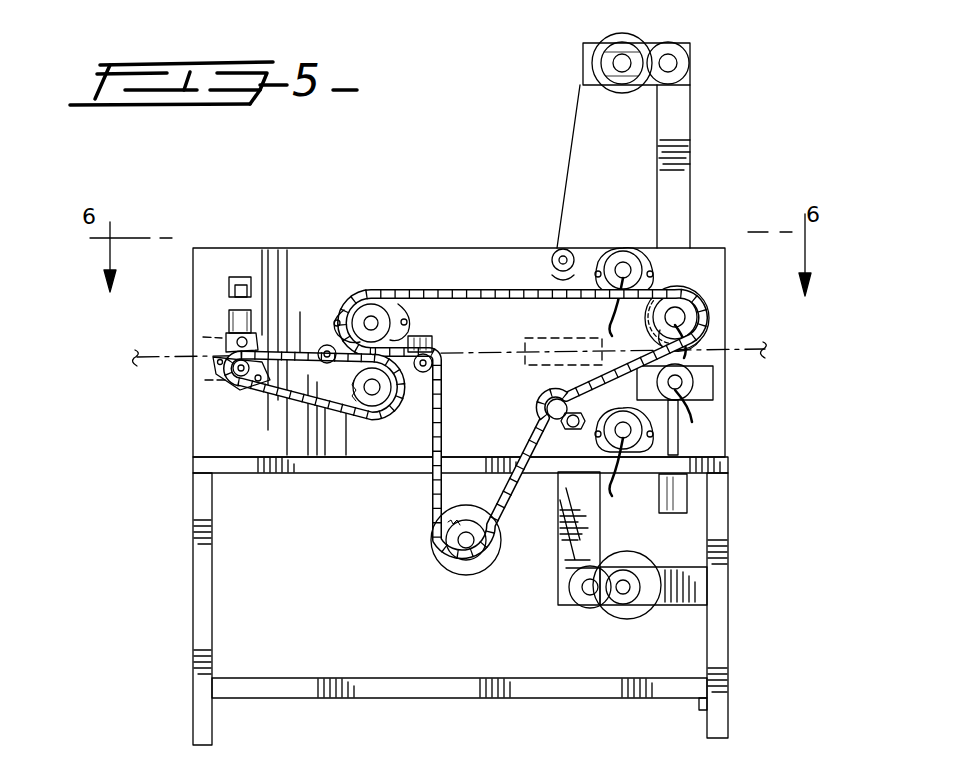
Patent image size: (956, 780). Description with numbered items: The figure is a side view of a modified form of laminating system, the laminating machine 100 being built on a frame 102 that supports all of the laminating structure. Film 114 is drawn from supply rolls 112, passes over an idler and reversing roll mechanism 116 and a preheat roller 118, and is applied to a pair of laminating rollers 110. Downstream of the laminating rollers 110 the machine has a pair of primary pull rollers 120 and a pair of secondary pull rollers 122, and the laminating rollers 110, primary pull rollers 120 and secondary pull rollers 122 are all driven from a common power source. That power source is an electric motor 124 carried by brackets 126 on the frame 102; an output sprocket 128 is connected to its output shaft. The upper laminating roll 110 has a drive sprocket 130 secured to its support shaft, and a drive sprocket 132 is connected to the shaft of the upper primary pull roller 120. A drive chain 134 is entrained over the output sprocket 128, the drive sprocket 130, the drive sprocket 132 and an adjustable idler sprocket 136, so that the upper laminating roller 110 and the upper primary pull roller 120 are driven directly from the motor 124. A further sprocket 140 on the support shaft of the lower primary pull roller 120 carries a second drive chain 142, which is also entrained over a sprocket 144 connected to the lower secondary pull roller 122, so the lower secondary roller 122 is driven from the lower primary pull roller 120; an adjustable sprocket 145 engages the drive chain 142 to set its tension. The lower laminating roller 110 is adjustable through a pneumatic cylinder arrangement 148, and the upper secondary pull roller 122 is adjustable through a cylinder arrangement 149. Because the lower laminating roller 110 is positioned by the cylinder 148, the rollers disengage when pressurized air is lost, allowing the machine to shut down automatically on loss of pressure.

The laminating machine 100 is at (252, 222).
The frame 102 is at (172, 517).
The laminating rollers 110 is at (700, 340).
The supply rolls 112 is at (608, 35).
The film 114 is at (563, 183).
The idler and reversing roll mechanism 116 is at (532, 272).
The preheat roller 118 is at (640, 250).
The primary pull rollers 120 is at (360, 288).
The secondary pull rollers 122 is at (200, 337).
The electric motor 124 is at (445, 557).
The brackets 126 is at (446, 510).
The output sprocket 128 is at (468, 566).
The drive sprocket 130 is at (670, 307).
The drive sprocket 132 is at (352, 297).
The drive chain 134 is at (440, 291).
The adjustable idler sprocket 136 is at (441, 370).
The further sprocket 140 is at (332, 412).
The drive chain 142 is at (266, 400).
The sprocket 144 is at (228, 383).
The adjustable sprocket 145 is at (322, 344).
The pneumatic cylinder arrangement 148 is at (708, 500).
The cylinder arrangement 149 is at (212, 296).